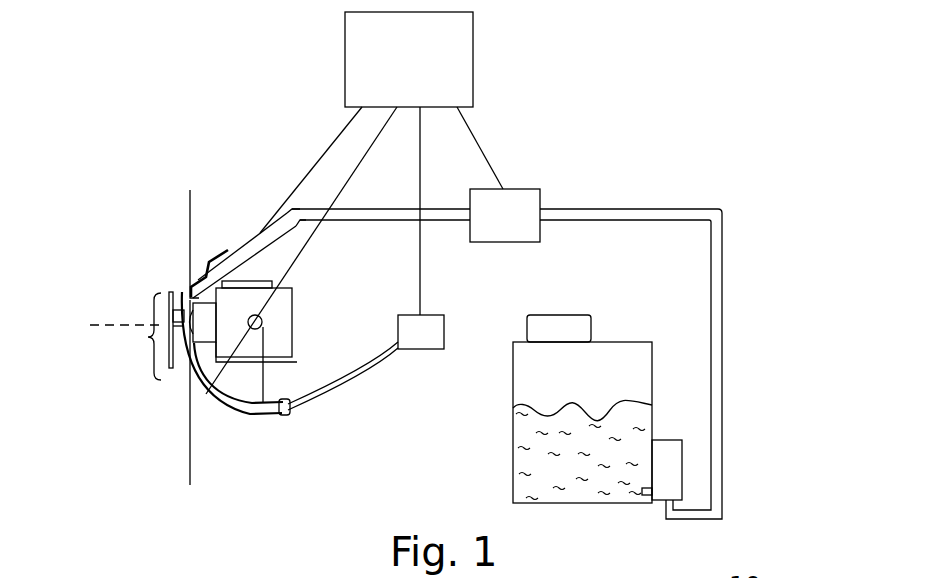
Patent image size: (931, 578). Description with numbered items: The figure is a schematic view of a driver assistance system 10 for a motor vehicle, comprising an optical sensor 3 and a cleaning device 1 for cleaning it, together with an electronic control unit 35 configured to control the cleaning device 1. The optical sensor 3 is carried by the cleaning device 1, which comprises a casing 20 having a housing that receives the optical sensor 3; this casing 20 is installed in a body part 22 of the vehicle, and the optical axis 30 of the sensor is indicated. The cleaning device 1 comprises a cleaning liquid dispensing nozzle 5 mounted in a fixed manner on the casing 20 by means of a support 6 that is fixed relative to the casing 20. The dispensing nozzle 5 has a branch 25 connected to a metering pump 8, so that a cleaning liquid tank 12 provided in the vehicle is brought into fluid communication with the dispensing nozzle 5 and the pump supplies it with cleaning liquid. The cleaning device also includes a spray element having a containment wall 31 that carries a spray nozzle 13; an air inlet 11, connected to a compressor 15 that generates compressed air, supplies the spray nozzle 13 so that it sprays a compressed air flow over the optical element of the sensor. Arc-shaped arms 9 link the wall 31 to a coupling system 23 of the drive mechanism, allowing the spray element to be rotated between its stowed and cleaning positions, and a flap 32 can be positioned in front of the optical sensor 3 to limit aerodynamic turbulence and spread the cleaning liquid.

The cleaning device 1 is at (147, 336).
The optical sensor 3 is at (293, 325).
The cleaning liquid dispensing nozzle 5 is at (254, 248).
The support 6 is at (212, 262).
The metering pump 8 is at (505, 215).
The arms 9 is at (238, 387).
The driver assistance system 10 is at (705, 64).
The air inlet 11 is at (283, 407).
The cleaning liquid tank 12 is at (523, 457).
The spray nozzle 13 is at (183, 317).
The compressor 15 is at (366, 362).
The casing 20 is at (187, 358).
The body part 22 is at (188, 253).
The coupling system 23 is at (248, 316).
The branch 25 is at (300, 208).
The optical axis 30 is at (127, 327).
The wall 31 is at (208, 396).
The flap 32 is at (170, 300).
The electronic control unit 35 is at (354, 203).